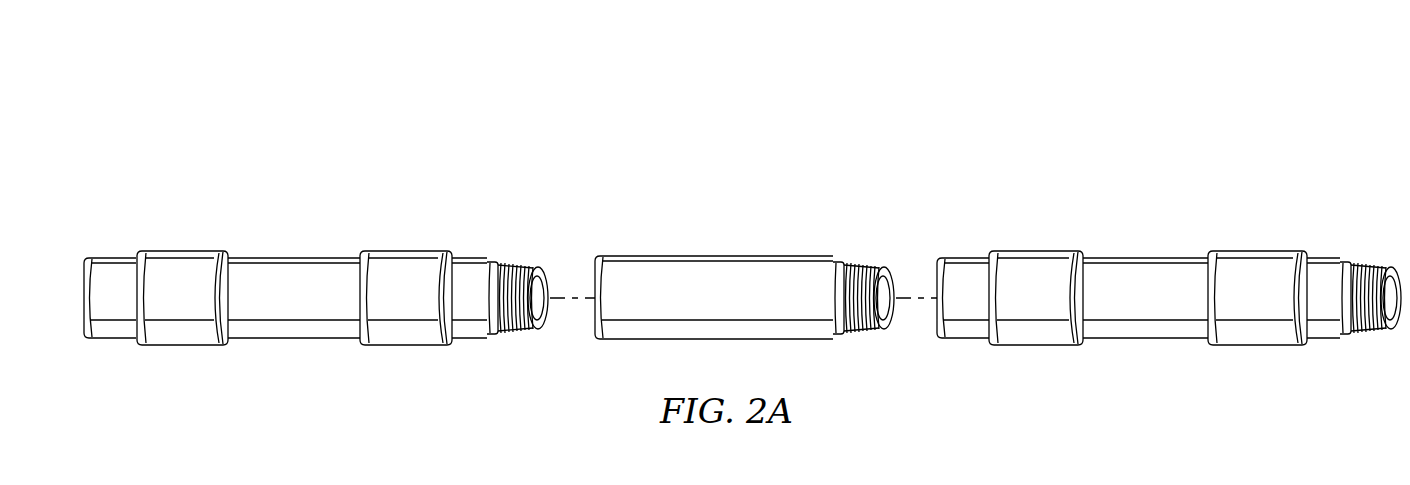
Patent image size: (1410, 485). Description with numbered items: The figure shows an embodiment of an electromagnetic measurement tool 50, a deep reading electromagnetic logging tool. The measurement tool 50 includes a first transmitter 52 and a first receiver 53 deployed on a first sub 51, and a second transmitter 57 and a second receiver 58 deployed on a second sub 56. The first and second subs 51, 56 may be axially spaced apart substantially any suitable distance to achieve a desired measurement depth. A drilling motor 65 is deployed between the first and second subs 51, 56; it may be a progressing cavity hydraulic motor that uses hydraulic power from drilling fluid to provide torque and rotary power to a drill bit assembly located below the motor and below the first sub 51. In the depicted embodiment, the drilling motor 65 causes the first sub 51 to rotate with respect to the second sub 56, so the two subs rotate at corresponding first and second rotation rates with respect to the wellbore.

The electromagnetic measurement tool 50 is at (742, 212).
The first sub 51 is at (1133, 257).
The first transmitter 52 is at (1268, 252).
The first receiver 53 is at (1040, 252).
The second sub 56 is at (283, 258).
The second transmitter 57 is at (188, 251).
The second receiver 58 is at (415, 252).
The drilling motor 65 is at (732, 257).